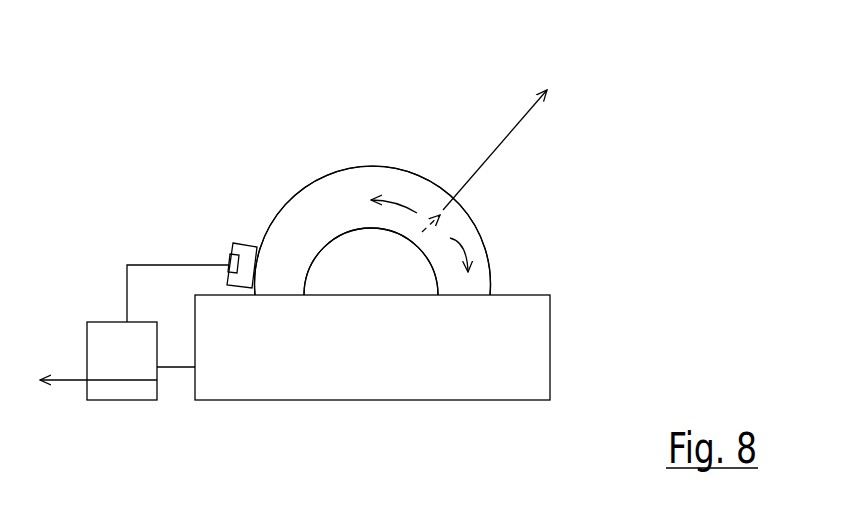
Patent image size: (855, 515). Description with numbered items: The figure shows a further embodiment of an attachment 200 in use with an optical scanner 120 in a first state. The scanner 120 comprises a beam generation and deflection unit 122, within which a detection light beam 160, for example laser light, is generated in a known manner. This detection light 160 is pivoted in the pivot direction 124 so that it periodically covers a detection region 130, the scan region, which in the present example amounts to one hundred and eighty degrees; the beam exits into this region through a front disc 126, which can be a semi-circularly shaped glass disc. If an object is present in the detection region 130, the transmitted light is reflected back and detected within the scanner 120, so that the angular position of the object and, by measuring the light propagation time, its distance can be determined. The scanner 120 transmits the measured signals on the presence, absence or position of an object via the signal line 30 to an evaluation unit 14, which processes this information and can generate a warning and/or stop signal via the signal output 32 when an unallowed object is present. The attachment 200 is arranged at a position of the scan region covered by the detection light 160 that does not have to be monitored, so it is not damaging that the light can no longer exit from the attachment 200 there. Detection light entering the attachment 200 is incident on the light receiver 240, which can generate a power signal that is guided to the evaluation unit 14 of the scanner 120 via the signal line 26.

The evaluation unit 14 is at (120, 402).
The signal line 26 is at (126, 272).
The signal line 30 is at (173, 368).
The signal output 32 is at (77, 378).
The scanner 120 is at (612, 273).
The beam generation and deflection unit 122 is at (338, 245).
The pivot direction 124 is at (395, 200).
The front disc 126 is at (278, 212).
The detection region 130 is at (430, 26).
The detection light 160 is at (495, 155).
The attachment 200 is at (248, 243).
The light receiver 240 is at (230, 258).